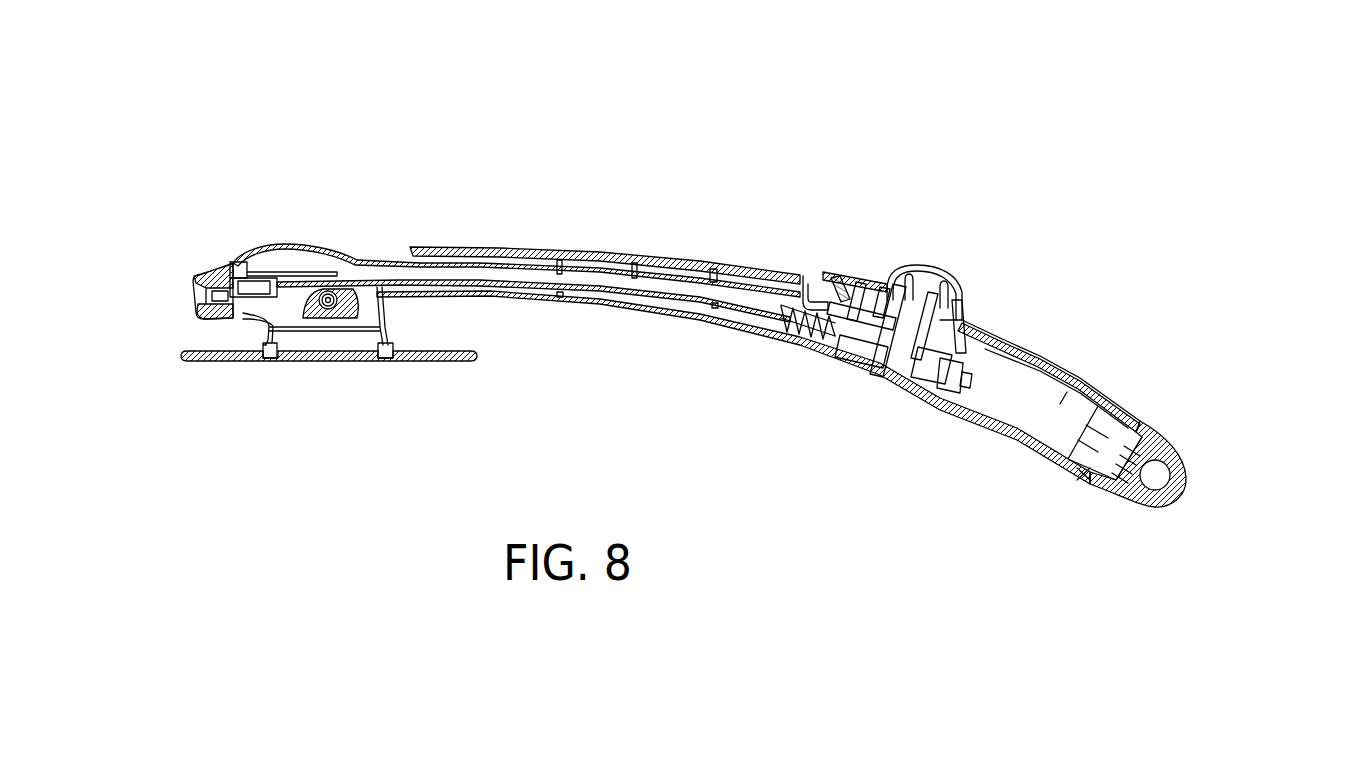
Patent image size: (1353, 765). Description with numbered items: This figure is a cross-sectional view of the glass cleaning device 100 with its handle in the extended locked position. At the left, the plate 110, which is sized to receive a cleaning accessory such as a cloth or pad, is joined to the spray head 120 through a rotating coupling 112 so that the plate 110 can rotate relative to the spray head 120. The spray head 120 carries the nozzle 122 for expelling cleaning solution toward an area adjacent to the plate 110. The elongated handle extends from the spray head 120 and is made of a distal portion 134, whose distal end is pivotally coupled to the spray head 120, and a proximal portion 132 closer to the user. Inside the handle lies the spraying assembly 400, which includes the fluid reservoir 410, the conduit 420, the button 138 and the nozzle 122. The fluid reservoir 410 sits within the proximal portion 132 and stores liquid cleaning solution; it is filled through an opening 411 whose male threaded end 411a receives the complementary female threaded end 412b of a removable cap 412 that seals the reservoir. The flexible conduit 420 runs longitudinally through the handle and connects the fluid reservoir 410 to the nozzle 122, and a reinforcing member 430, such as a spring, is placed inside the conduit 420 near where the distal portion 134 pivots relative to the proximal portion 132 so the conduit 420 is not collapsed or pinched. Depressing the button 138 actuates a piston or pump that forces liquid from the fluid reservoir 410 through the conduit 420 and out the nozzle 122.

The glass cleaning device 100 is at (340, 66).
The plate 110 is at (437, 362).
The rotating coupling 112 is at (267, 361).
The spray head 120 is at (306, 247).
The nozzle 122 is at (227, 265).
The proximal portion 132 is at (980, 430).
The distal portion 134 is at (678, 256).
The button 138 is at (967, 287).
The spraying assembly 400 is at (913, 433).
The fluid reservoir 410 is at (1066, 403).
The opening 411 is at (1136, 415).
The threaded end 411a is at (1085, 474).
The cap 412 is at (1187, 485).
The threaded end 412b is at (1147, 428).
The conduit 420 is at (590, 282).
The reinforcing member 430 is at (804, 333).